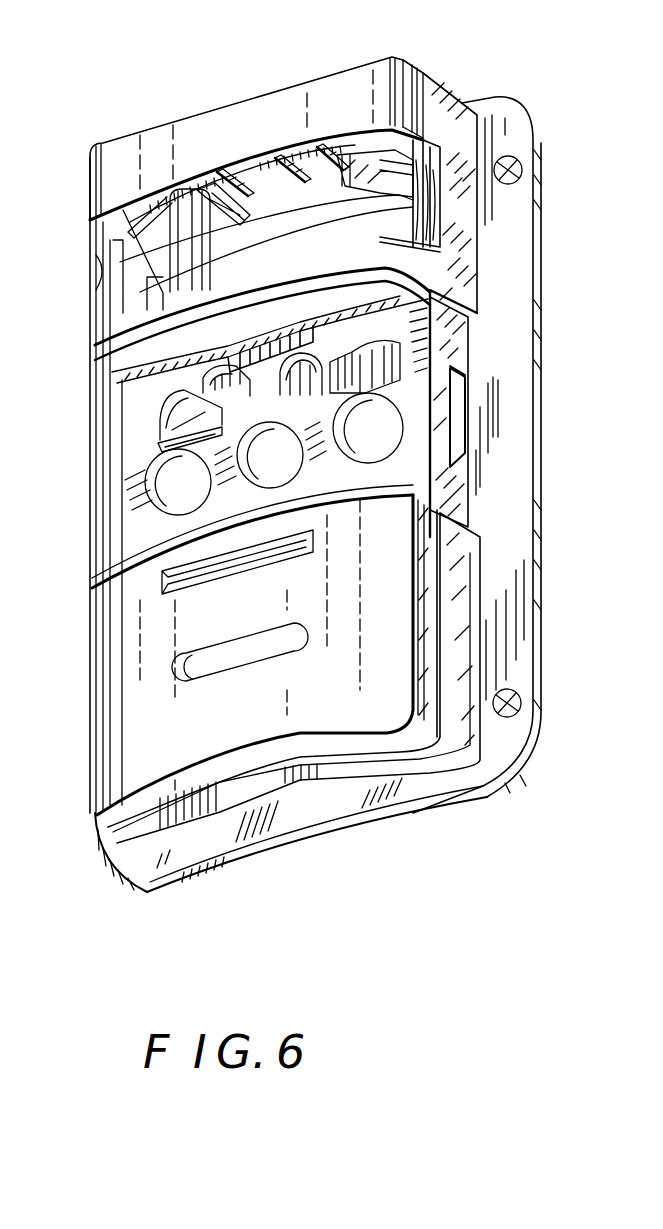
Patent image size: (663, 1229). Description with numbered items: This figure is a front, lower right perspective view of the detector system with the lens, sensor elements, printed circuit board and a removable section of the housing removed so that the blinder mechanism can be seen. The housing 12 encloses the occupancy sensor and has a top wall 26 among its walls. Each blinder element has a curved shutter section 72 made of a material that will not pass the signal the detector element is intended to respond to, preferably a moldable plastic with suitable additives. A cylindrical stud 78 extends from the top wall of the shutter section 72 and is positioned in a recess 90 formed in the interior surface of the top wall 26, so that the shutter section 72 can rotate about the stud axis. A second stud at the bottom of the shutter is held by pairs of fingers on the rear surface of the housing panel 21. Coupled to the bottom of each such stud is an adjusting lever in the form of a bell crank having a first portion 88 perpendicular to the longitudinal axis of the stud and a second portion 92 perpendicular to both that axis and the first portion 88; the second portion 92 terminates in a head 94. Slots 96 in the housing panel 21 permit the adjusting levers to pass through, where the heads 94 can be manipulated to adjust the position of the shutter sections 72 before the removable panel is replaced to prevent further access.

The housing 12 is at (453, 608).
The housing panel 21 is at (417, 392).
The top wall 26 is at (238, 99).
The recess 90 is at (262, 147).
The cylindrical stud 78 is at (247, 210).
The shutter section 72 is at (199, 245).
The head 94 is at (393, 339).
The second portion 92 is at (163, 412).
The first portion 88 is at (167, 440).
The slots 96 is at (145, 492).